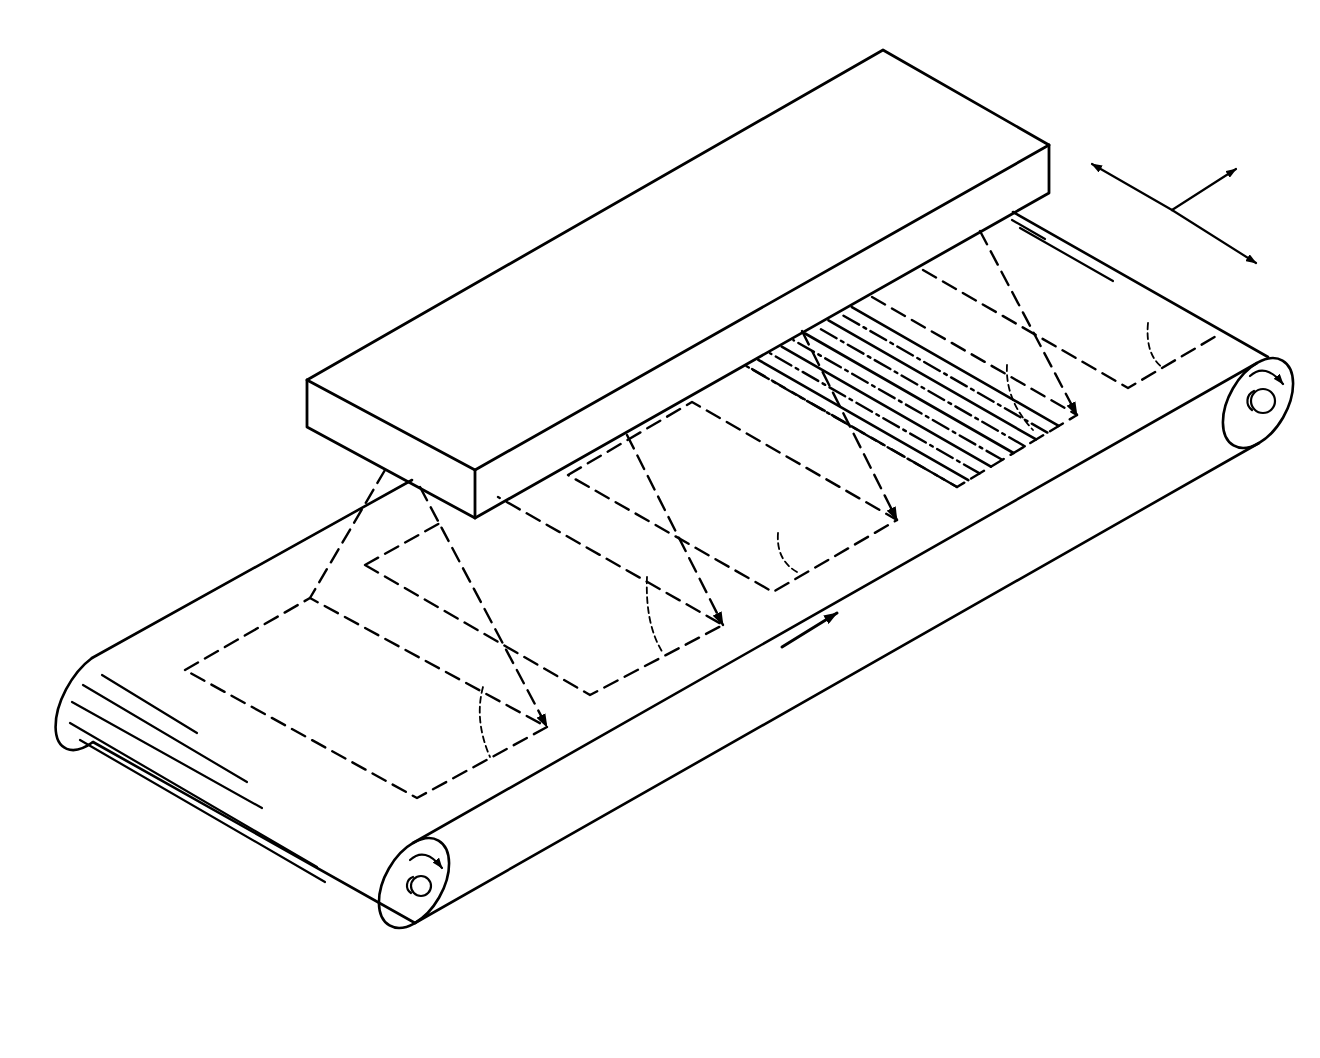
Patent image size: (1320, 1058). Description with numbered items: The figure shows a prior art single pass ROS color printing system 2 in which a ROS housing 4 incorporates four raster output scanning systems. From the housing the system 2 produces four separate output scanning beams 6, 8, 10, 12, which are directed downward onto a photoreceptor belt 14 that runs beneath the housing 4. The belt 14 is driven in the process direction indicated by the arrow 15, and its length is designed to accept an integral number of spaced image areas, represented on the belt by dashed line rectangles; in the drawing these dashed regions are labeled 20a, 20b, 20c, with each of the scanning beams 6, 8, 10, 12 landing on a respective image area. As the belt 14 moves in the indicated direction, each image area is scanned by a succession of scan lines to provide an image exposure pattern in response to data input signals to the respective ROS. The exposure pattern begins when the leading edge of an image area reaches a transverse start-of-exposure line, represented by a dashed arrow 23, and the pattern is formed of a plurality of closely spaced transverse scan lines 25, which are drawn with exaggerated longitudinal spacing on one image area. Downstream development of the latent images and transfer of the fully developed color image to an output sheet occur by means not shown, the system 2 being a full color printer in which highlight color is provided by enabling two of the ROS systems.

The single pass ROS color printing system 2 is at (357, 220).
The ROS housing 4 is at (607, 230).
The output scanning beam 6 is at (482, 604).
The output scanning beam 8 is at (664, 505).
The output scanning beam 10 is at (843, 487).
The output scanning beam 12 is at (1018, 310).
The photoreceptor belt 14 is at (1024, 493).
The arrow 15 is at (810, 632).
The first image region 20a is at (432, 664).
The second image region 20b is at (600, 555).
The third image region 20c is at (785, 457).
The dashed arrow 23 is at (972, 360).
The transverse scan lines 25 is at (950, 462).